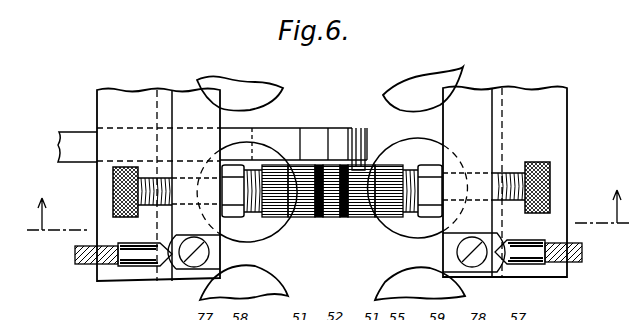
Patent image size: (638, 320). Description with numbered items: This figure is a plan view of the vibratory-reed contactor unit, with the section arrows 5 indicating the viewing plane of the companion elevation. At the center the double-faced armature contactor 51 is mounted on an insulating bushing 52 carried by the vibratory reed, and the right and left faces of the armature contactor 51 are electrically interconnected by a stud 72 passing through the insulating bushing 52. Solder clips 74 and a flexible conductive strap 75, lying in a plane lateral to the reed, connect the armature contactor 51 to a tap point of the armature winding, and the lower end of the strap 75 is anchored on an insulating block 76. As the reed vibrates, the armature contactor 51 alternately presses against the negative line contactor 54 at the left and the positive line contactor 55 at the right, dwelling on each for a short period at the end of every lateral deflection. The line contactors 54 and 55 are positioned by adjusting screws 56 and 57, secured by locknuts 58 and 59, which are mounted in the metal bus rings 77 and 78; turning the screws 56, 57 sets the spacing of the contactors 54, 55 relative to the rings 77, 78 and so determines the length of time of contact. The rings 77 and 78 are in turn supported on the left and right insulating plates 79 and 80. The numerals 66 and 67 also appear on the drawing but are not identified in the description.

The section line 5- 5 is at (329, 200).
The armature contactor 51 is at (312, 219).
The insulating bushing 52 is at (331, 220).
The negative line contactor 54 is at (270, 220).
The positive line contactor 55 is at (385, 219).
The adjusting screw 56 is at (160, 210).
The adjusting screw 57 is at (515, 164).
The locknut 58 is at (230, 220).
The locknut 59 is at (419, 165).
The circular guard plate 66 is at (235, 142).
The circular guard plate 67 is at (422, 276).
The stud 72 is at (321, 219).
The solder clip 74 is at (357, 128).
The flexible conductive strap 75 is at (70, 132).
The insulating block 76 is at (282, 145).
The metal ring 77 is at (176, 94).
The metal ring 78 is at (452, 101).
The insulating plate 79 is at (108, 92).
The insulating plate 80 is at (535, 88).